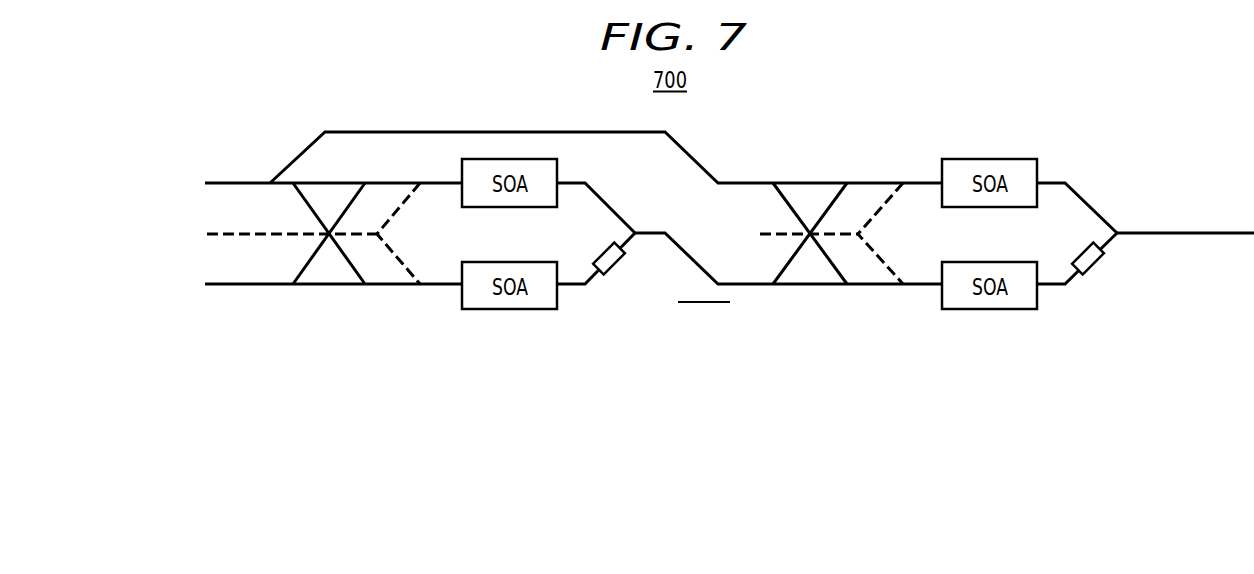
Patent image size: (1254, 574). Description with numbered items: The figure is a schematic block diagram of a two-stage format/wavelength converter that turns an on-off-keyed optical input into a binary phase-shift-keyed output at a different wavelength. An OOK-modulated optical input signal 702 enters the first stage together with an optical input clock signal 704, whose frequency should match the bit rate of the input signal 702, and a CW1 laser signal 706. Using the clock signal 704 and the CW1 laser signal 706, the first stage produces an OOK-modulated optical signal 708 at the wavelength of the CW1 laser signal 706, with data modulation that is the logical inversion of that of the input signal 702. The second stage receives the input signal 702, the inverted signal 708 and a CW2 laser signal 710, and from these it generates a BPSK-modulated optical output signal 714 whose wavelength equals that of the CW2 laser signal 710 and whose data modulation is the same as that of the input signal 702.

The OOK-modulated optical input signal 702 is at (231, 183).
The optical input clock signal 704 is at (224, 286).
The CW1 laser signal 706 is at (225, 233).
The OOK-modulated optical signal 708 is at (653, 232).
The CW2 laser signal 710 is at (779, 231).
The BPSK-modulated optical output signal 714 is at (1200, 236).